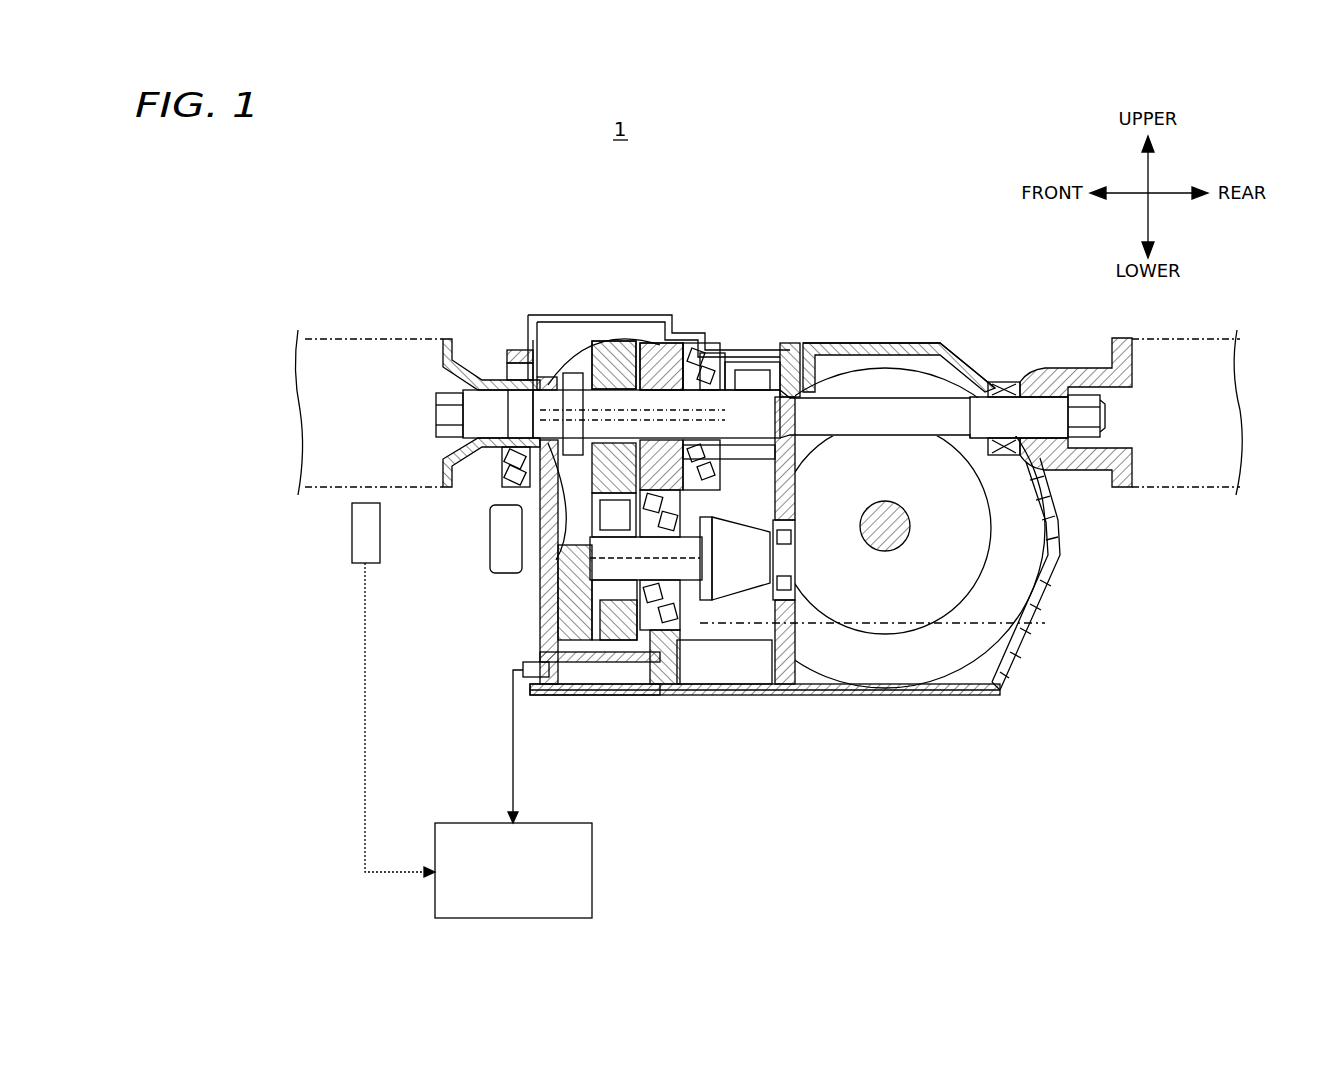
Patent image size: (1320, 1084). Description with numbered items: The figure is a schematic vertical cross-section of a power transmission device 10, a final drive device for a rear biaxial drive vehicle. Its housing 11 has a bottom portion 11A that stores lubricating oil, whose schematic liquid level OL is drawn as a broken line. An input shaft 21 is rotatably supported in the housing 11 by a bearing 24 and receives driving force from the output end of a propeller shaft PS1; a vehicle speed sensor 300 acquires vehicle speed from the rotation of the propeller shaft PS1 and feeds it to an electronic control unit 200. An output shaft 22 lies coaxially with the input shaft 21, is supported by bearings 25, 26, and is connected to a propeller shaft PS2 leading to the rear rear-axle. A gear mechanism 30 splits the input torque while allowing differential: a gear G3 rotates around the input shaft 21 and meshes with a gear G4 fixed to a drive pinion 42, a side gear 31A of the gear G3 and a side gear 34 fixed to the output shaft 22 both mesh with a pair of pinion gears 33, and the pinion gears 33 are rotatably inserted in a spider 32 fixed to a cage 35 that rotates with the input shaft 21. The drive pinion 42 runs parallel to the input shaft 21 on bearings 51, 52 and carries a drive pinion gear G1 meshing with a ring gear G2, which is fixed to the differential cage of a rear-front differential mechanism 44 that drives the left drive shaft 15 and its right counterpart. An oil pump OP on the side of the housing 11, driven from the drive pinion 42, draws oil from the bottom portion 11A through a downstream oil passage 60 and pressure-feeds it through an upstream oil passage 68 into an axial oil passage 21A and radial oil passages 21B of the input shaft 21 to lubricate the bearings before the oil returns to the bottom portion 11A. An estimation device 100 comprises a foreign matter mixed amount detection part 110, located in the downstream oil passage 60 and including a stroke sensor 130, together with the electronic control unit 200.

The power transmission device 10 is at (940, 244).
The housing 11 is at (1040, 628).
The bottom portion 11A is at (997, 686).
The left drive shaft 15 is at (872, 549).
The input shaft 21 is at (497, 405).
The axial oil passage 21A is at (518, 352).
The radial oil passages 21B is at (783, 346).
The output shaft 22 is at (873, 408).
The bearing 24 is at (492, 380).
The bearing 25 is at (745, 360).
The bearing 26 is at (1005, 382).
The gear mechanism 30 is at (656, 296).
The side gear 31A is at (605, 341).
The spider 32 is at (665, 343).
The pinion gears 33 is at (697, 343).
The side gear 34 is at (715, 354).
The cage 35 is at (645, 343).
The drive pinion 42 is at (545, 485).
The rear-front differential mechanism 44 is at (1027, 527).
The bearing 51 is at (705, 585).
The bearing 52 is at (770, 615).
The downstream oil passage 60 is at (618, 695).
The upstream oil passage 68 is at (502, 468).
The estimation device 100 is at (618, 800).
The foreign matter mixed amount detection part 110 is at (575, 695).
The stroke sensor 130 is at (523, 665).
The electronic control unit 200 is at (492, 884).
The vehicle speed sensor 300 is at (352, 537).
The drive pinion gear G1 is at (735, 585).
The ring gear G2 is at (966, 506).
The gear G3 is at (560, 345).
The gear G4 is at (545, 608).
The liquid level OL is at (1036, 612).
The oil pump OP is at (490, 540).
The propeller shaft PS1 is at (372, 332).
The propeller shaft PS2 is at (1198, 385).